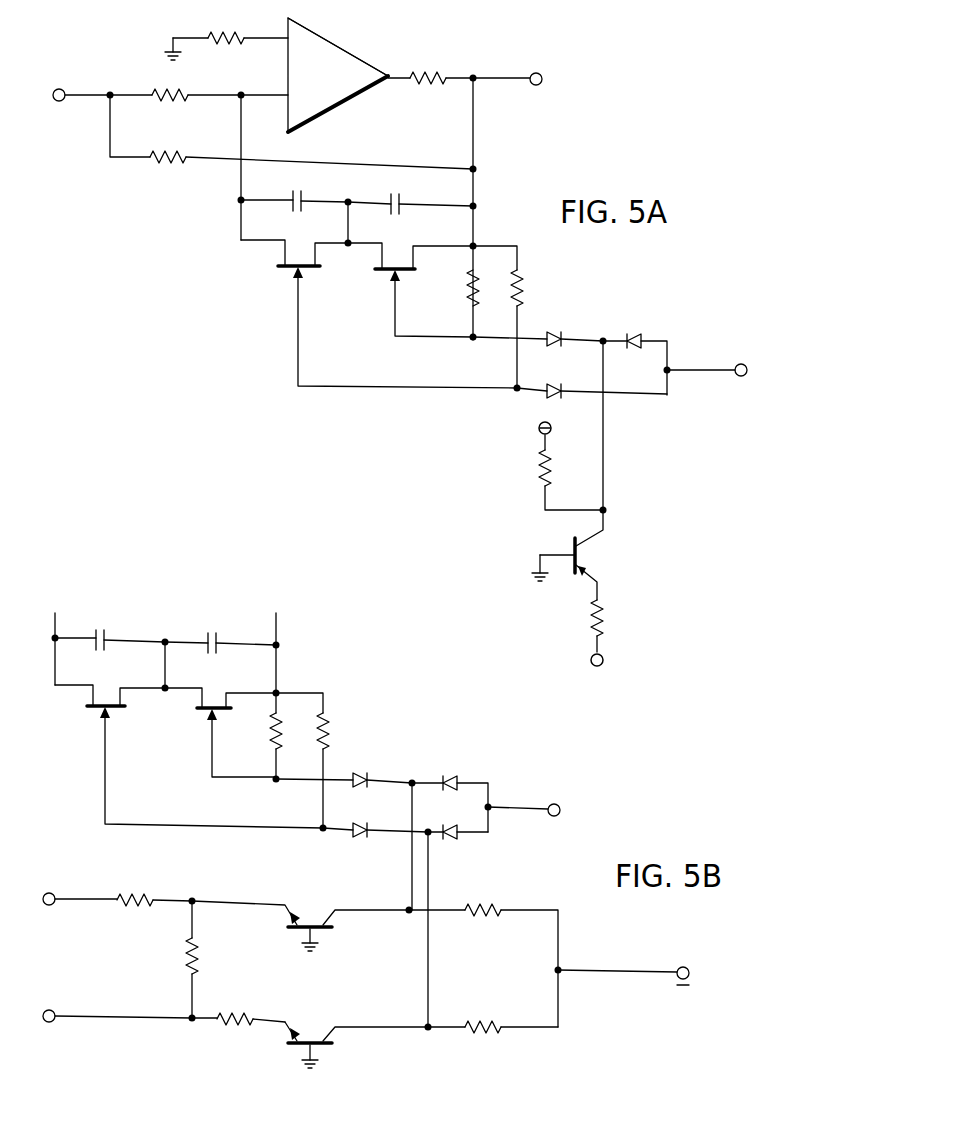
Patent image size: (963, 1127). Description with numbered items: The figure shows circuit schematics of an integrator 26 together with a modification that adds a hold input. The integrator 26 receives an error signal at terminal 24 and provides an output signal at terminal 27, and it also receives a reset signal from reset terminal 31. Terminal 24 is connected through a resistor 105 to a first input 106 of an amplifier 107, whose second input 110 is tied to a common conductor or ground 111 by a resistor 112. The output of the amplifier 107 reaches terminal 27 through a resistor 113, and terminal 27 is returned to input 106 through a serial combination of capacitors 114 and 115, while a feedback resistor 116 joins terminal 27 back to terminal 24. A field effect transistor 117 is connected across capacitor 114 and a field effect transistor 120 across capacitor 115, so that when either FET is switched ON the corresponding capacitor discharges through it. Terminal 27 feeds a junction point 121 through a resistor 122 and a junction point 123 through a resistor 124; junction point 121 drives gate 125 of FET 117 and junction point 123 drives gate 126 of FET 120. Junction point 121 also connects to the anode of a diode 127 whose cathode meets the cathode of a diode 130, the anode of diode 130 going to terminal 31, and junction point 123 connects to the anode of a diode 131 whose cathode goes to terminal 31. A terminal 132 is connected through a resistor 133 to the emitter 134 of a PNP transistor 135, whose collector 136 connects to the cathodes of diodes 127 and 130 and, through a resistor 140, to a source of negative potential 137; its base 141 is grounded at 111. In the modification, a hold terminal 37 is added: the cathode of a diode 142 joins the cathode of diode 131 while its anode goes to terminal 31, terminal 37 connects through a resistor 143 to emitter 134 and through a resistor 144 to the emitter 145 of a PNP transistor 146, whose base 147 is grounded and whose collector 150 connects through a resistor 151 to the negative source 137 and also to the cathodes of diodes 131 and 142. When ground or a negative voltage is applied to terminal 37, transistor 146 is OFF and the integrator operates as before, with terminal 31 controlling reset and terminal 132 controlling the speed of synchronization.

In FIG. 5A, the terminal 24 is at (63, 92).
In FIG. 5A, the integrator 26 is at (420, 29).
In FIG. 5A, the terminal 27 is at (541, 80).
In FIG. 5A, the reset terminal 31 is at (735, 367).
In FIG. 5B, the reset terminal 31 is at (559, 812).
In FIG. 5B, the terminal 37 is at (54, 1012).
In FIG. 5A, the resistor 105 is at (174, 93).
In FIG. 5A, the first input 106 is at (288, 95).
In FIG. 5A, the amplifier 107 is at (334, 42).
In FIG. 5A, the second input 110 is at (288, 30).
In FIG. 5A, the common conductor or ground 111 is at (170, 52).
In FIG. 5B, the common conductor or ground 111 is at (302, 950).
In FIG. 5A, the resistor 112 is at (217, 36).
In FIG. 5A, the resistor 113 is at (427, 74).
In FIG. 5A, the capacitor 114 is at (397, 202).
In FIG. 5B, the capacitor 114 is at (215, 638).
In FIG. 5A, the capacitor 115 is at (300, 200).
In FIG. 5B, the capacitor 115 is at (105, 637).
In FIG. 5A, the feedback resistor 116 is at (168, 156).
In FIG. 5A, the field effect transistor 117 is at (410, 249).
In FIG. 5B, the field effect transistor 117 is at (226, 691).
In FIG. 5A, the field effect transistor 120 is at (313, 241).
In FIG. 5B, the field effect transistor 120 is at (120, 685).
In FIG. 5A, the junction point 121 is at (470, 342).
In FIG. 5B, the junction point 121 is at (272, 785).
In FIG. 5A, the resistor 122 is at (467, 285).
In FIG. 5B, the resistor 122 is at (271, 734).
In FIG. 5A, the junction point 123 is at (515, 394).
In FIG. 5A, the resistor 124 is at (519, 283).
In FIG. 5B, the resistor 124 is at (328, 728).
In FIG. 5A, the gate 125 is at (390, 274).
In FIG. 5B, the gate 125 is at (207, 714).
In FIG. 5A, the gate 126 is at (293, 272).
In FIG. 5B, the gate 126 is at (101, 711).
In FIG. 5A, the diode 127 is at (552, 332).
In FIG. 5B, the diode 127 is at (361, 774).
In FIG. 5A, the diode 130 is at (632, 334).
In FIG. 5B, the diode 130 is at (447, 778).
In FIG. 5A, the diode 131 is at (552, 386).
In FIG. 5B, the diode 131 is at (361, 822).
In FIG. 5A, the terminal 132 is at (604, 656).
In FIG. 5B, the terminal 132 is at (47, 894).
In FIG. 5A, the resistor 133 is at (604, 618).
In FIG. 5B, the resistor 133 is at (133, 899).
In FIG. 5A, the emitter 134 is at (583, 578).
In FIG. 5B, the emitter 134 is at (291, 925).
In FIG. 5A, the PNP transistor 135 is at (609, 563).
In FIG. 5B, the PNP transistor 135 is at (322, 918).
In FIG. 5A, the collector 136 is at (593, 534).
In FIG. 5B, the collector 136 is at (326, 916).
In FIG. 5A, the source of negative potential 137 is at (549, 426).
In FIG. 5B, the source of negative potential 137 is at (687, 970).
In FIG. 5A, the resistor 140 is at (546, 468).
In FIG. 5B, the resistor 140 is at (482, 908).
In FIG. 5A, the base 141 is at (564, 551).
In FIG. 5B, the base 141 is at (316, 948).
In FIG. 5B, the diode 142 is at (454, 840).
In FIG. 5B, the resistor 143 is at (188, 959).
In FIG. 5B, the resistor 144 is at (231, 1020).
In FIG. 5B, the emitter 145 is at (289, 1038).
In FIG. 5B, the PNP transistor 146 is at (322, 1035).
In FIG. 5B, the base 147 is at (316, 1064).
In FIG. 5B, the collector 150 is at (326, 1034).
In FIG. 5B, the resistor 151 is at (484, 1034).